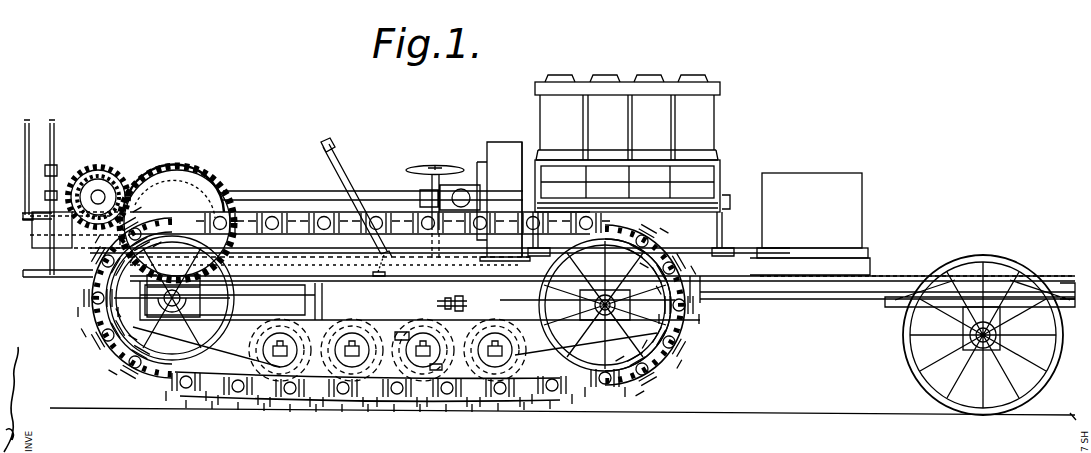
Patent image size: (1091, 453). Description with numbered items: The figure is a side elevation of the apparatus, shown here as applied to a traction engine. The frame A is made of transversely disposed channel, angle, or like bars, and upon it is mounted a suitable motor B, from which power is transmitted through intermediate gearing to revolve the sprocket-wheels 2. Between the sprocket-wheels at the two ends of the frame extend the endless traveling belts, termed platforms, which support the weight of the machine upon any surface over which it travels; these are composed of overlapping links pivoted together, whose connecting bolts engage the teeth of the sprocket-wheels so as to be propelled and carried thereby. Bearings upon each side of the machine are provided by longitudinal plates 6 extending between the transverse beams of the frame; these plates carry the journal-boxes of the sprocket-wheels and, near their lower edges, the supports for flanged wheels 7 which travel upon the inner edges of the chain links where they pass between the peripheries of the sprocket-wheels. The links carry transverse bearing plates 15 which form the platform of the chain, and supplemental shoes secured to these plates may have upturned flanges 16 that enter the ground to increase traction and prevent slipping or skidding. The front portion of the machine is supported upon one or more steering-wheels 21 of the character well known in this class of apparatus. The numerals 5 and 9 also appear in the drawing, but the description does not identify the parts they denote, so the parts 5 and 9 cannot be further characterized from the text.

The motor B is at (612, 108).
The sprocket-wheels 2 is at (300, 180).
The frame A is at (422, 260).
The connecting rod 5 is at (468, 308).
The longitudinal plates 6 is at (423, 307).
The flanged wheels 7 is at (435, 366).
The driving gear 9 is at (202, 183).
The transverse bearing plates 15 is at (672, 344).
The upturned flanges 16 is at (192, 390).
The steering-wheels 21 is at (930, 367).